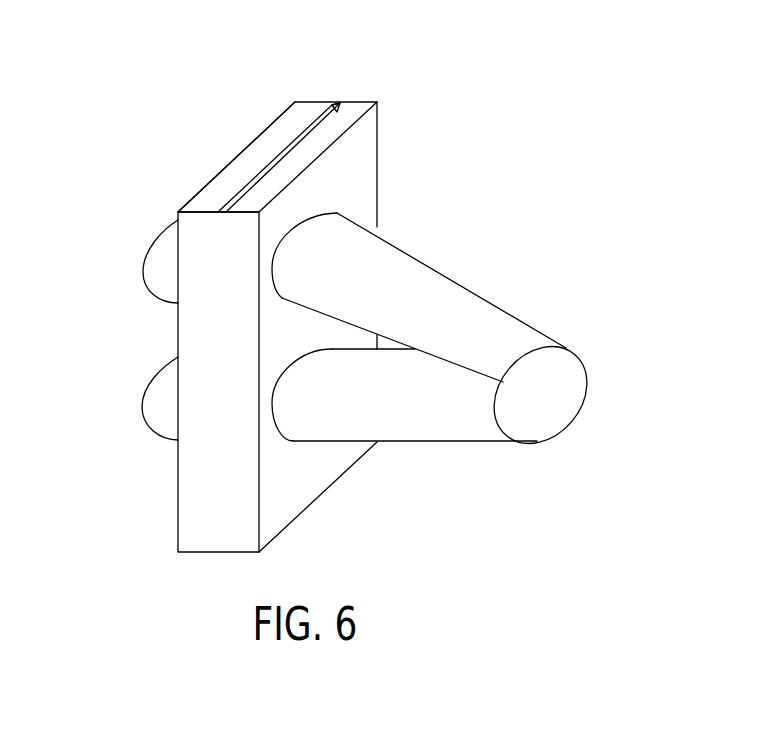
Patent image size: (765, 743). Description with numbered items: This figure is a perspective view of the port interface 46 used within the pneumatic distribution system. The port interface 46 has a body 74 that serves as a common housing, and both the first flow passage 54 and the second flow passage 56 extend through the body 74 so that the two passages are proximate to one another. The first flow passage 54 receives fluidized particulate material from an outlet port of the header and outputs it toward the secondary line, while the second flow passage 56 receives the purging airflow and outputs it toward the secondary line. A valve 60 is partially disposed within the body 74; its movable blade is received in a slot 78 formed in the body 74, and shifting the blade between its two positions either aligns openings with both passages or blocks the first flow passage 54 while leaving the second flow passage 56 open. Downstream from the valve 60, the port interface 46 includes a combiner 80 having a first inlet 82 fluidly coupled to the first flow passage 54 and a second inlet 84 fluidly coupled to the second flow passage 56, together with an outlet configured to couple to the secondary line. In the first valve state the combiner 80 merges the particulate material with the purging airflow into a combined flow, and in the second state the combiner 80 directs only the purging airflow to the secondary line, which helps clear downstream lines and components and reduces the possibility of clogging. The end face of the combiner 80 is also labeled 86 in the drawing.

The port interface 46 is at (414, 127).
The first flow passage 54 is at (150, 384).
The second flow passage 56 is at (152, 247).
The valve 60 is at (341, 93).
The body 74 is at (258, 137).
The slot 78 is at (252, 176).
The combiner 80 is at (453, 319).
The first inlet 82 is at (272, 412).
The second inlet 84 is at (305, 213).
The end face 86 is at (568, 423).